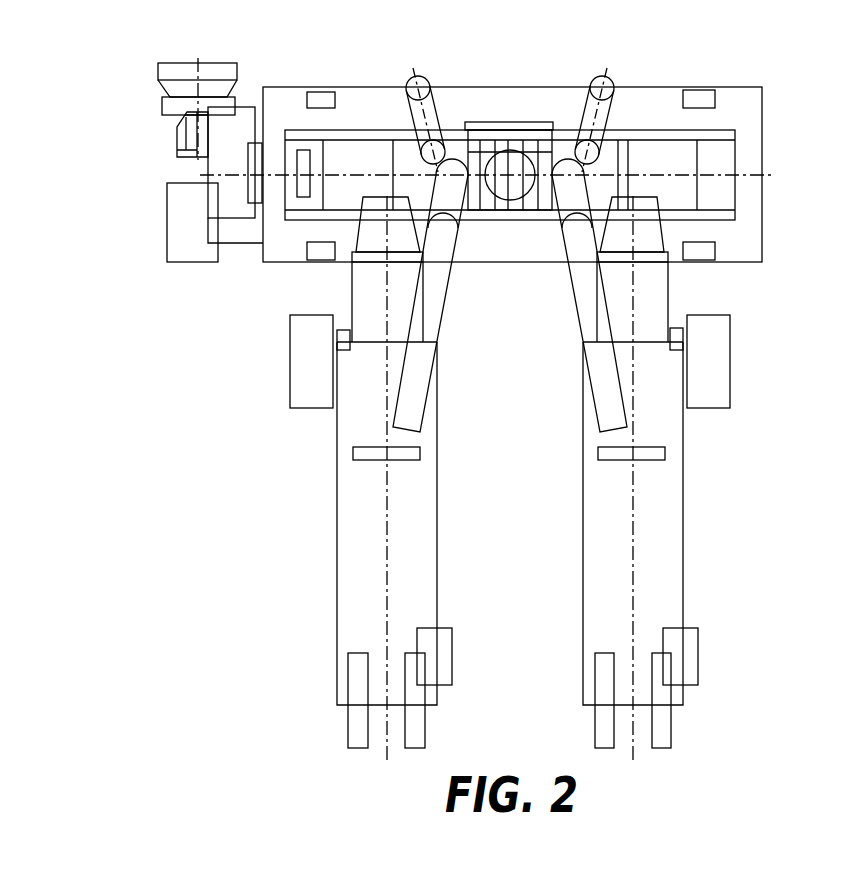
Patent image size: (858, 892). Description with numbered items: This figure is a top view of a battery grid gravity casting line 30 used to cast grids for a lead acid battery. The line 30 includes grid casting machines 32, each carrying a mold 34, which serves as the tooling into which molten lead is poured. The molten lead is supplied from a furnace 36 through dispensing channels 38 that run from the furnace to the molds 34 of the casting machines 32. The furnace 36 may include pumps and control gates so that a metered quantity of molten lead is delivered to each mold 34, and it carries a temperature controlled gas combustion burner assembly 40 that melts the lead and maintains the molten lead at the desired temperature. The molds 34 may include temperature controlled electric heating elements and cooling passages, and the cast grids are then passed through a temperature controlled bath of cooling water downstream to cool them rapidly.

The battery grid gravity casting line 30 is at (87, 80).
The grid casting machine 32 is at (330, 488).
The mold 34 is at (350, 450).
The furnace 36 is at (764, 205).
The dispensing channel 38 is at (575, 310).
The gas combustion burner assembly 40 is at (175, 133).